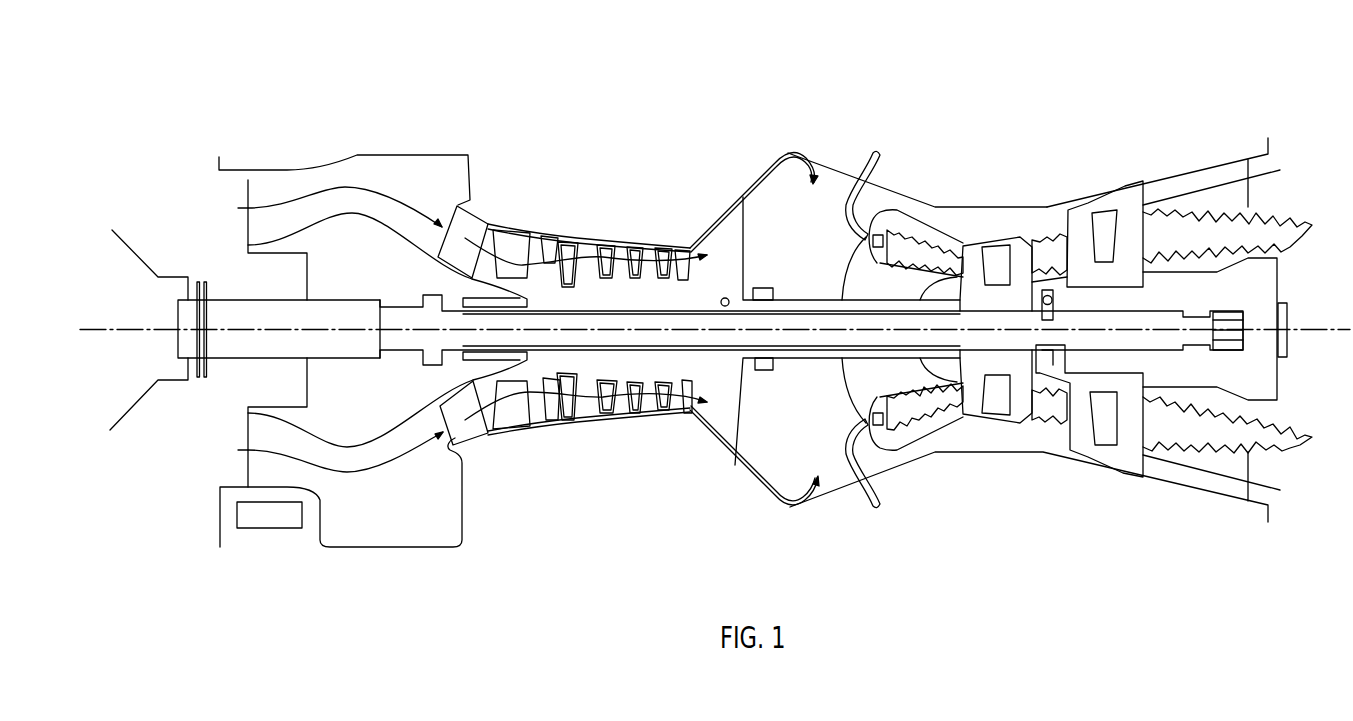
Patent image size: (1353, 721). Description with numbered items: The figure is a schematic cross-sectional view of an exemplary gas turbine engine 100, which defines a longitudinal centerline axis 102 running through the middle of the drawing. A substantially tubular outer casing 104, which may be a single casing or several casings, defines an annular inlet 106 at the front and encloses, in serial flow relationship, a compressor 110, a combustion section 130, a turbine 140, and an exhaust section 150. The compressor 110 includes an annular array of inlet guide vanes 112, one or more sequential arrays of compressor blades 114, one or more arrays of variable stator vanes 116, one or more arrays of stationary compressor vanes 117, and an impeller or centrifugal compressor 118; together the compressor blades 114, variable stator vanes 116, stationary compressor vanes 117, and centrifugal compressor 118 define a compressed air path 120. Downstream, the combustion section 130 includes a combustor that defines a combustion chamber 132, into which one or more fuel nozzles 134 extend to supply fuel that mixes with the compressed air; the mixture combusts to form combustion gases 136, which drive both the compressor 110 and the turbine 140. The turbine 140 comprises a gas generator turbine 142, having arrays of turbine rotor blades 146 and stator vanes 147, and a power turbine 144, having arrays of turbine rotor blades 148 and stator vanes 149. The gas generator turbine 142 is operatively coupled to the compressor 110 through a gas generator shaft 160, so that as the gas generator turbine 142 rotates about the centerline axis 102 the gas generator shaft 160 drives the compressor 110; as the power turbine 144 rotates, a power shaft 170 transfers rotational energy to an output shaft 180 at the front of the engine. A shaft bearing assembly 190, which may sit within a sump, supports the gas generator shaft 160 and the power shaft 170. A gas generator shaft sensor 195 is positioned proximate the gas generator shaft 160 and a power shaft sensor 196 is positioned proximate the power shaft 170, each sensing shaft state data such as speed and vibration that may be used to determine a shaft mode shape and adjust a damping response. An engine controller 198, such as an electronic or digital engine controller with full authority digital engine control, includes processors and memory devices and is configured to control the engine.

The gas turbine engine 100 is at (988, 95).
The centerline axis 102 is at (107, 325).
The outer casing 104 is at (558, 230).
The annular inlet 106 is at (250, 187).
The compressor 110 is at (567, 425).
The inlet guide vanes 112 is at (507, 390).
The compressor blades 114 is at (552, 250).
The variable stator vanes 116 is at (607, 408).
The stationary compressor vanes 117 is at (663, 253).
The centrifugal compressor 118 is at (725, 425).
The compressed air path 120 is at (487, 230).
The combustion section 130 is at (842, 450).
The combustion chamber 132 is at (903, 215).
The fuel nozzles 134 is at (796, 297).
The combustion gases 136 is at (930, 445).
The turbine 140 is at (1092, 462).
The gas generator turbine 142 is at (1030, 400).
The power turbine 144 is at (1147, 212).
The turbine rotor blades 146 is at (965, 245).
The stator vanes 147 is at (1003, 243).
The turbine rotor blades 148 is at (1078, 210).
The stator vanes 149 is at (1108, 215).
The exhaust section 150 is at (1240, 502).
The gas generator shaft 160 is at (803, 300).
The power shaft 170 is at (1153, 340).
The output shaft 180 is at (217, 308).
The shaft bearing assembly 190 is at (758, 365).
The gas generator shaft sensor 195 is at (725, 298).
The power shaft sensor 196 is at (1053, 300).
The engine controller 198 is at (257, 530).